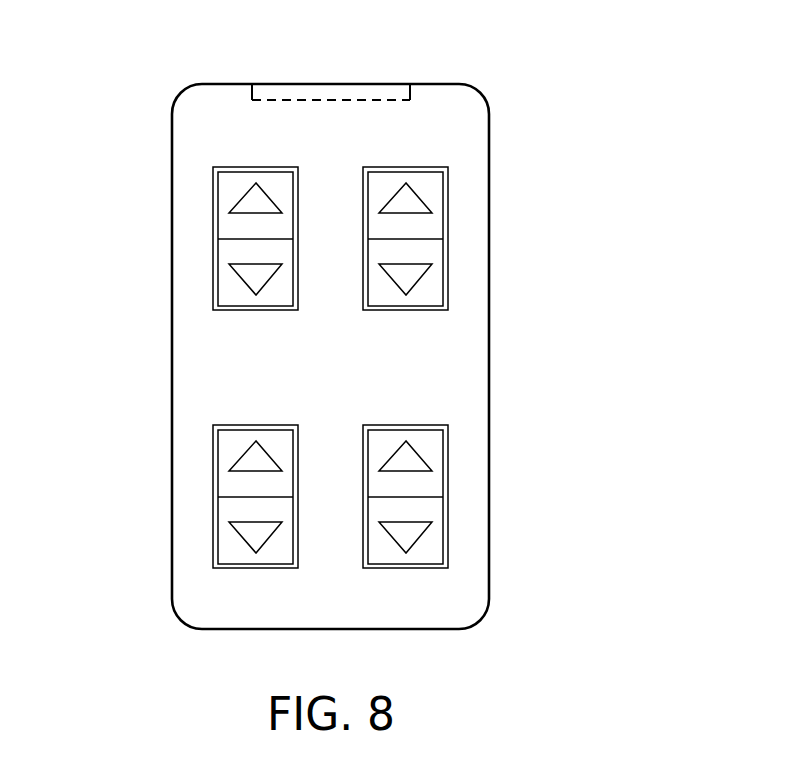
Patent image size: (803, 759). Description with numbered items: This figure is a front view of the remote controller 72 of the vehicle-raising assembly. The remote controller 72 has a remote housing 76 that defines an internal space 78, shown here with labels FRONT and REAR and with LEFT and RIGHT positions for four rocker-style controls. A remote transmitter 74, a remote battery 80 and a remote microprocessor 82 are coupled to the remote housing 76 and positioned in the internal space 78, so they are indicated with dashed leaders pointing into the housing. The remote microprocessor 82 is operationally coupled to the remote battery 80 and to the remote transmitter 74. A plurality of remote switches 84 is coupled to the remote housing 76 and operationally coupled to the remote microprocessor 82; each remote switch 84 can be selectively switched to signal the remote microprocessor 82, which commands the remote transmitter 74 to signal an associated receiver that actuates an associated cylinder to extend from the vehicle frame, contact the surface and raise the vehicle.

The remote controller 72 is at (530, 121).
The remote transmitter 74 is at (437, 357).
The remote housing 76 is at (489, 222).
The internal space 78 is at (465, 308).
The remote battery 80 is at (455, 390).
The remote microprocessor 82 is at (467, 440).
The remote switches 84 is at (367, 310).